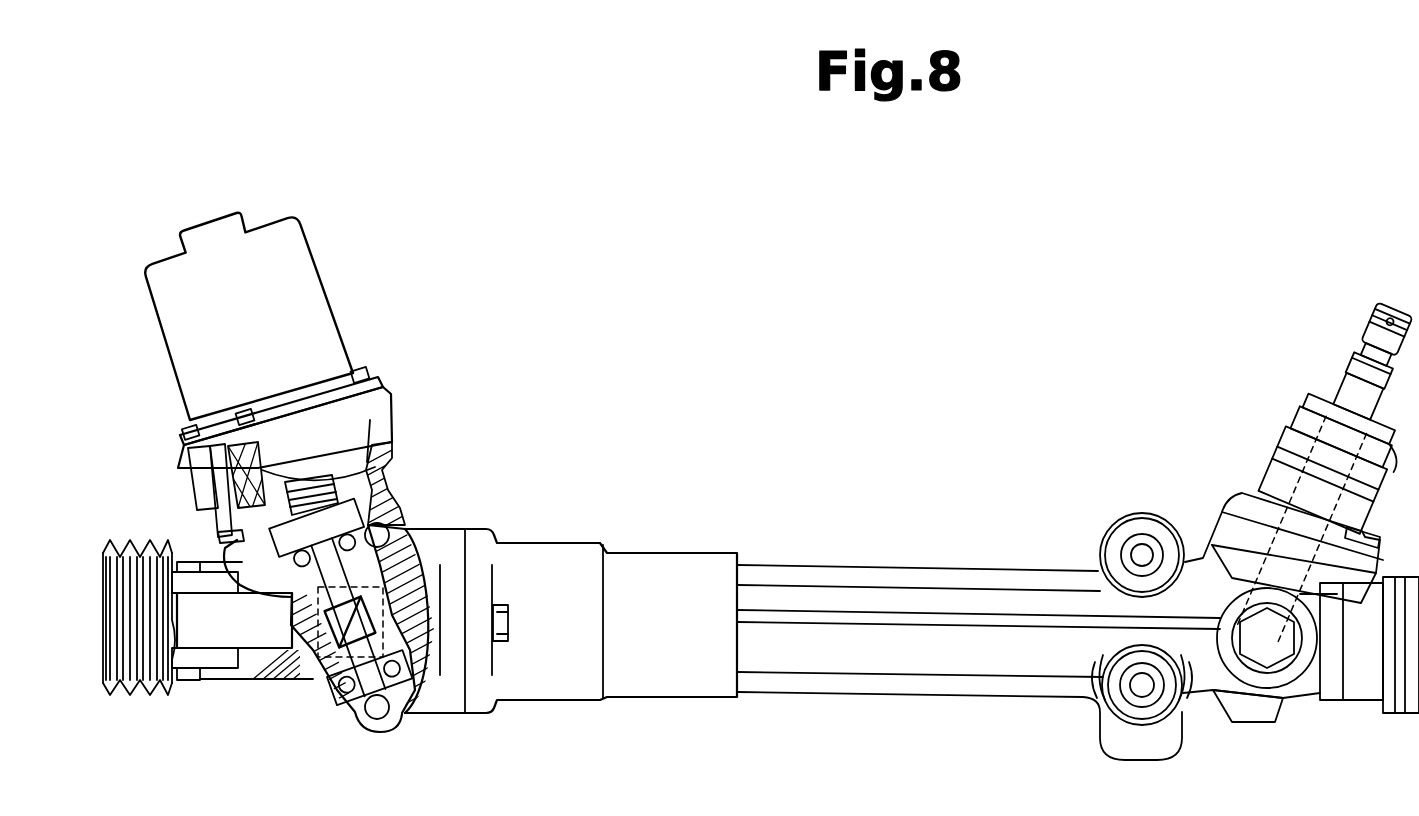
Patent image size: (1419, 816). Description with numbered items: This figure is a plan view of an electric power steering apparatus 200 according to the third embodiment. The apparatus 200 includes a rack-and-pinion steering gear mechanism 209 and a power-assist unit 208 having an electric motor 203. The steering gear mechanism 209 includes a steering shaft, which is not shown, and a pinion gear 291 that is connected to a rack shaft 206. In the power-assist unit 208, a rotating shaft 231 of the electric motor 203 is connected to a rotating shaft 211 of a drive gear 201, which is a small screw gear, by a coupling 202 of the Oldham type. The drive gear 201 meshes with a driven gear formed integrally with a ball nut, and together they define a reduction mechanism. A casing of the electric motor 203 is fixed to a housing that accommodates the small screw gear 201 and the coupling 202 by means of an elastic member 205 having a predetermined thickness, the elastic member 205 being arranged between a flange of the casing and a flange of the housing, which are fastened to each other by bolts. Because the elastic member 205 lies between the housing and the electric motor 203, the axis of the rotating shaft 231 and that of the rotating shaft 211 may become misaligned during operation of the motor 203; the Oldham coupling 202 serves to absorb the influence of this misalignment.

The power steering apparatus 200 is at (1358, 205).
The drive gear 201 is at (322, 660).
The coupling 202 is at (383, 492).
The electric motor 203 is at (305, 285).
The elastic member 205 is at (390, 430).
The rack shaft 206 is at (208, 640).
The power-assist unit 208 is at (317, 475).
The rack-and-pinion steering gear mechanism 209 is at (1189, 500).
The rotating shaft of the drive gear 211 is at (410, 530).
The rotating shaft of the electric motor 231 is at (395, 453).
The pinion gear 291 is at (1272, 688).